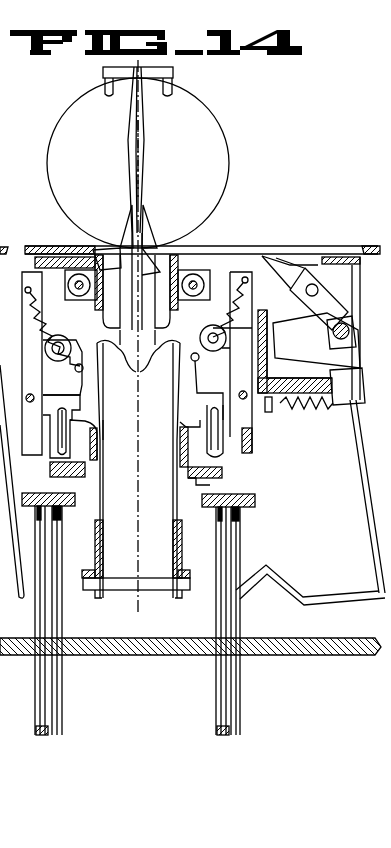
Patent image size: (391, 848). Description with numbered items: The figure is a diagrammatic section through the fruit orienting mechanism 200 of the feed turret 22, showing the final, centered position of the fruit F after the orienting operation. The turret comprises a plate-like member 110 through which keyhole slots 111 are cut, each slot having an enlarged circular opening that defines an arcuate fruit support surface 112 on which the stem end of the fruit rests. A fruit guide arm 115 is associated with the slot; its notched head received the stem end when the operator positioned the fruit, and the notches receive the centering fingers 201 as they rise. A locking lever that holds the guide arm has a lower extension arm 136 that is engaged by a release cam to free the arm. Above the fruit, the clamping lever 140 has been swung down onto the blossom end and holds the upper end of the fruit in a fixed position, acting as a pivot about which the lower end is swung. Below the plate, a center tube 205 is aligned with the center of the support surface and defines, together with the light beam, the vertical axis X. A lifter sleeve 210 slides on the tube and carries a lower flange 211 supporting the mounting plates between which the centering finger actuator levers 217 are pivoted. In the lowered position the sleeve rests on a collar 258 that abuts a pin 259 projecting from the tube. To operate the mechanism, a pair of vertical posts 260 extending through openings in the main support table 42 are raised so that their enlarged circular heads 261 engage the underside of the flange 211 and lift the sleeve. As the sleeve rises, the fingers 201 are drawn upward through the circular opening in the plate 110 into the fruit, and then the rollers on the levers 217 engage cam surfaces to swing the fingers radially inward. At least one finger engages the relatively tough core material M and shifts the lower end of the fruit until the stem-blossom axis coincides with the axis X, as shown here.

The clamping lever 140 is at (152, 67).
The centering fingers 201 is at (140, 205).
The fruit support surface 112 is at (103, 247).
The plate-like member 110 is at (54, 247).
The fruit guide arm 115 is at (225, 247).
The keyhole slot 111 is at (344, 247).
The feed turret 22 is at (366, 238).
The centering finger actuator lever 217 is at (250, 430).
The orienting mechanism 200 is at (230, 456).
The lower flange 211 is at (206, 485).
The lifter sleeve 210 is at (95, 450).
The enlarged circular heads 261 is at (73, 507).
The center tube 205 is at (175, 561).
The lower extension arm 136 is at (377, 556).
The collar 258 is at (164, 572).
The pin 259 is at (152, 598).
The main support table 42 is at (164, 652).
The vertical posts 260 is at (215, 699).
The vertical axis X is at (135, 136).
The core material M is at (129, 155).
The fruit F is at (229, 163).